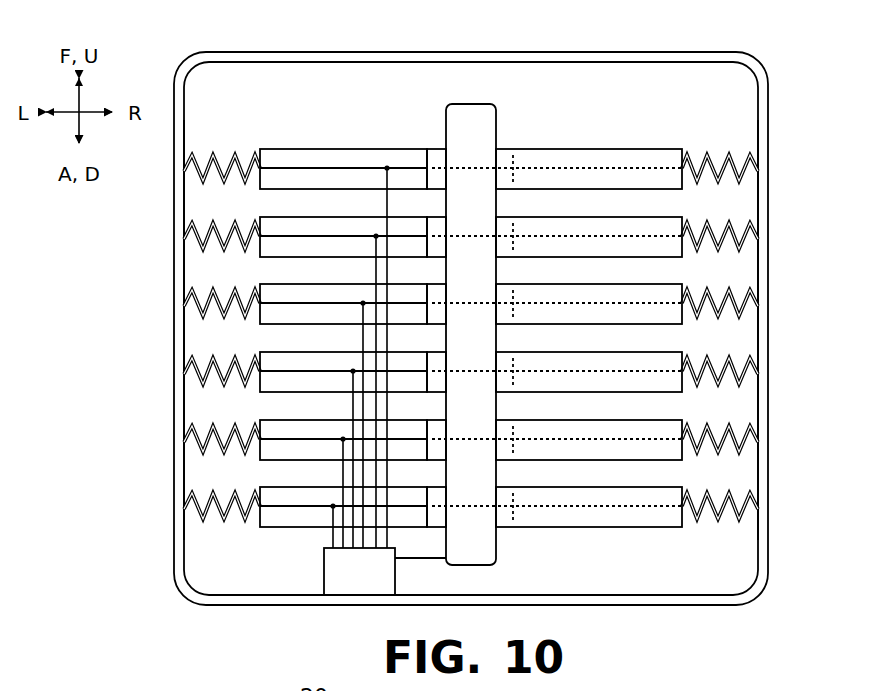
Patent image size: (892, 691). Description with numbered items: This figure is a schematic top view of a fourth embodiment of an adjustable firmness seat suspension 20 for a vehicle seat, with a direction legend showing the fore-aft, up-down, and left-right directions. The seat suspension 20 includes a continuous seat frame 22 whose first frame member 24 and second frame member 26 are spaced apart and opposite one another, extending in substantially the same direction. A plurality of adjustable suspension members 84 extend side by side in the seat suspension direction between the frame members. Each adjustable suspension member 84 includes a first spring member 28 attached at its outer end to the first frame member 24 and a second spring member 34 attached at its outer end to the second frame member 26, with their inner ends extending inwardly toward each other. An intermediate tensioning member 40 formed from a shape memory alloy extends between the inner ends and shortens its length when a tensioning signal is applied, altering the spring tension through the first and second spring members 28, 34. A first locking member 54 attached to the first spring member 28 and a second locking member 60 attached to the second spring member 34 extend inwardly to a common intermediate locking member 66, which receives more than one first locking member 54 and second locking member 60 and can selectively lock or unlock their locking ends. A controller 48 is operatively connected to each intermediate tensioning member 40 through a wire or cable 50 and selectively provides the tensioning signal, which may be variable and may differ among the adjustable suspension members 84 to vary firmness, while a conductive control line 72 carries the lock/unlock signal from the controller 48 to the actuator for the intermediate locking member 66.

The adjustable firmness seat suspension 20 is at (292, 50).
The seat frame 22 is at (175, 233).
The first frame member 24 is at (183, 265).
The second frame member 26 is at (762, 275).
The first spring member 28 is at (215, 152).
The second spring member 34 is at (712, 152).
The intermediate tensioning member 40 is at (408, 164).
The controller 48 is at (398, 577).
The wire or cable 50 is at (330, 535).
The first locking member 54 is at (327, 146).
The second locking member 60 is at (583, 148).
The intermediate locking member 66 is at (498, 118).
The conductive control line 72 is at (437, 556).
The adjustable suspension member 84 is at (690, 216).